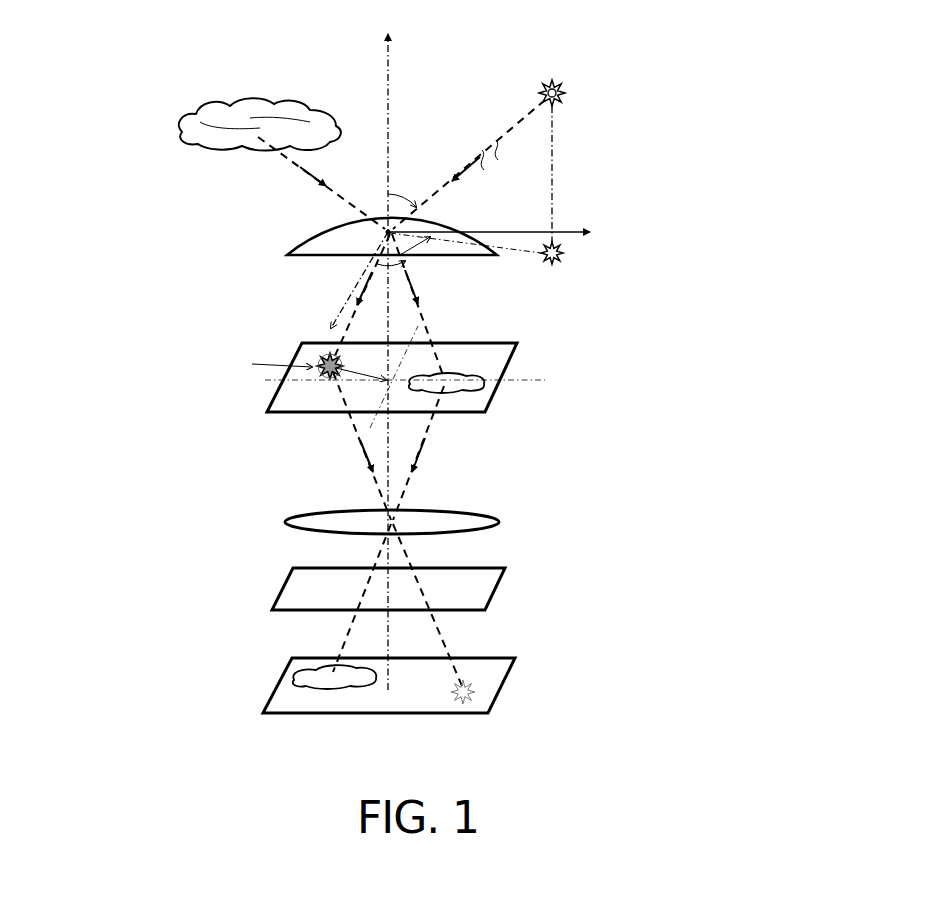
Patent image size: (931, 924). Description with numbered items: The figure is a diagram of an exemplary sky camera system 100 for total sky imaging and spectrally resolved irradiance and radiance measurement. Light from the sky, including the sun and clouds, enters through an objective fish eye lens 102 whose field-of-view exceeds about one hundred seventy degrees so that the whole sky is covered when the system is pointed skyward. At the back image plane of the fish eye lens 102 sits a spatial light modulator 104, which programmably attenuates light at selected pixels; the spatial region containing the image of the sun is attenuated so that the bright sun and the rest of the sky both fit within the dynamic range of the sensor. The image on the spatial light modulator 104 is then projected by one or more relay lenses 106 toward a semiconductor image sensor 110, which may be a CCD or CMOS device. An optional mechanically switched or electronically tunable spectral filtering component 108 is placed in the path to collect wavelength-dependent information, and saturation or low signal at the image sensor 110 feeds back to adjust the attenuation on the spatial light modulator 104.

The sky camera system 100 is at (786, 29).
The fish eye lens 102 is at (301, 236).
The spatial light modulator 104 is at (520, 347).
The relay lens 106 is at (497, 523).
The spectral filtering component 108 is at (505, 578).
The image sensor 110 is at (508, 680).